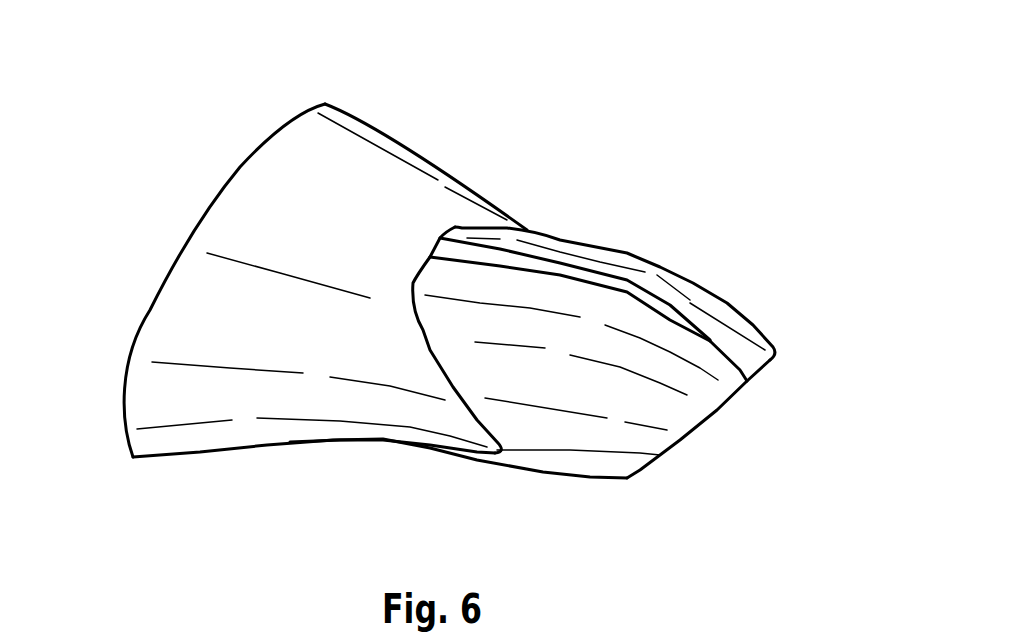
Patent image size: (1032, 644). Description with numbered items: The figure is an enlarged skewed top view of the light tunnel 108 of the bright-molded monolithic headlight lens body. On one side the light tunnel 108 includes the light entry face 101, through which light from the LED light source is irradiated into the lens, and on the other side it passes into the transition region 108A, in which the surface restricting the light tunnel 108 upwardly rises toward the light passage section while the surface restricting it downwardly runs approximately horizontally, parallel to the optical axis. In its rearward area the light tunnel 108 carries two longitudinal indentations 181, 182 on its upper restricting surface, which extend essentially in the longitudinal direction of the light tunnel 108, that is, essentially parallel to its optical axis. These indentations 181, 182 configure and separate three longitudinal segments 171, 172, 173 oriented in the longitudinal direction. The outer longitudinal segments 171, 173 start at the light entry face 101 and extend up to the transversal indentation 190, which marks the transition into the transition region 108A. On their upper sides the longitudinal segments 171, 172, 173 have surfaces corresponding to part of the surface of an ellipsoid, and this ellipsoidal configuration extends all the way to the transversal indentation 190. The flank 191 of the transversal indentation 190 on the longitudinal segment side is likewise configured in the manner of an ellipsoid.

The light entry face 101 is at (762, 394).
The light tunnel 108 is at (330, 465).
The transition region 108A is at (422, 185).
The longitudinal segment 171 is at (650, 268).
The longitudinal segment 172 is at (567, 270).
The longitudinal segment 173 is at (540, 388).
The longitudinal indentation 181 is at (667, 303).
The longitudinal indentation 182 is at (670, 323).
The transversal indentation 190 is at (430, 340).
The flank 191 is at (511, 243).